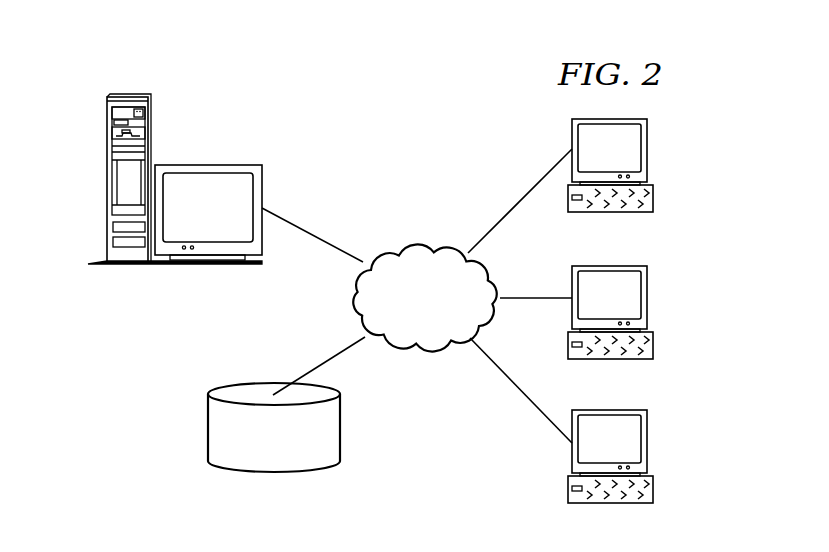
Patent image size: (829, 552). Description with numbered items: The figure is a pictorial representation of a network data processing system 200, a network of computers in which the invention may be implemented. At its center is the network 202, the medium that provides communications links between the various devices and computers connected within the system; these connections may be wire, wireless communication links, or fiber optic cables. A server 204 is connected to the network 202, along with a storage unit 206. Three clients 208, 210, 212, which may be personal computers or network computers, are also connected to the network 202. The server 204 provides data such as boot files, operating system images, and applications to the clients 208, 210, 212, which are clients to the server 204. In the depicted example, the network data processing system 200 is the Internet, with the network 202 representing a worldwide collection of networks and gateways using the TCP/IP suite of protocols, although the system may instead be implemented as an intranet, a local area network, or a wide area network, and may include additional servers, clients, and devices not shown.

The network data processing system 200 is at (305, 84).
The network 202 is at (395, 246).
The server 204 is at (107, 179).
The storage unit 206 is at (208, 429).
The client 208 is at (647, 149).
The client 210 is at (647, 297).
The client 212 is at (647, 443).